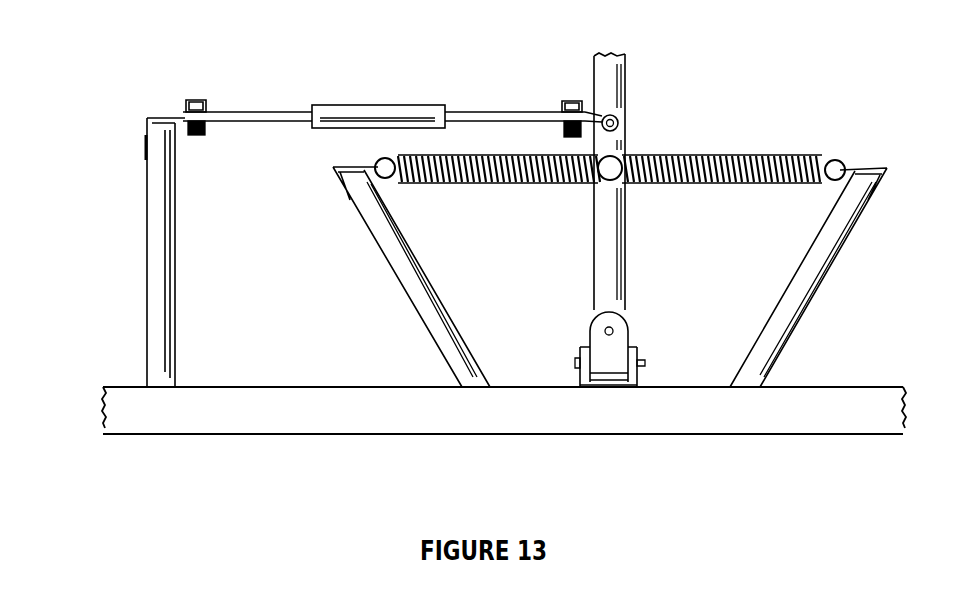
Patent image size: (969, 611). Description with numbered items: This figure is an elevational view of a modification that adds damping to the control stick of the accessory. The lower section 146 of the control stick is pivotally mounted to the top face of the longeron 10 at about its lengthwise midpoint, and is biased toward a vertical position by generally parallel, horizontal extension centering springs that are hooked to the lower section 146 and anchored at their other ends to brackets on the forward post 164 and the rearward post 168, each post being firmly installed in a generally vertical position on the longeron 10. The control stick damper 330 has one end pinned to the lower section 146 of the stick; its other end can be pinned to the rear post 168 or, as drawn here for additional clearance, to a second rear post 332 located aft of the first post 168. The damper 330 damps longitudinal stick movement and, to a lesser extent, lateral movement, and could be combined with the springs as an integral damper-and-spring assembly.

The longeron 10 is at (225, 437).
The lower section of the control stick 146 is at (625, 90).
The forward post 164 is at (790, 283).
The rearward post 168 is at (373, 235).
The control stick damper 330 is at (370, 105).
The second rear post 332 is at (149, 262).